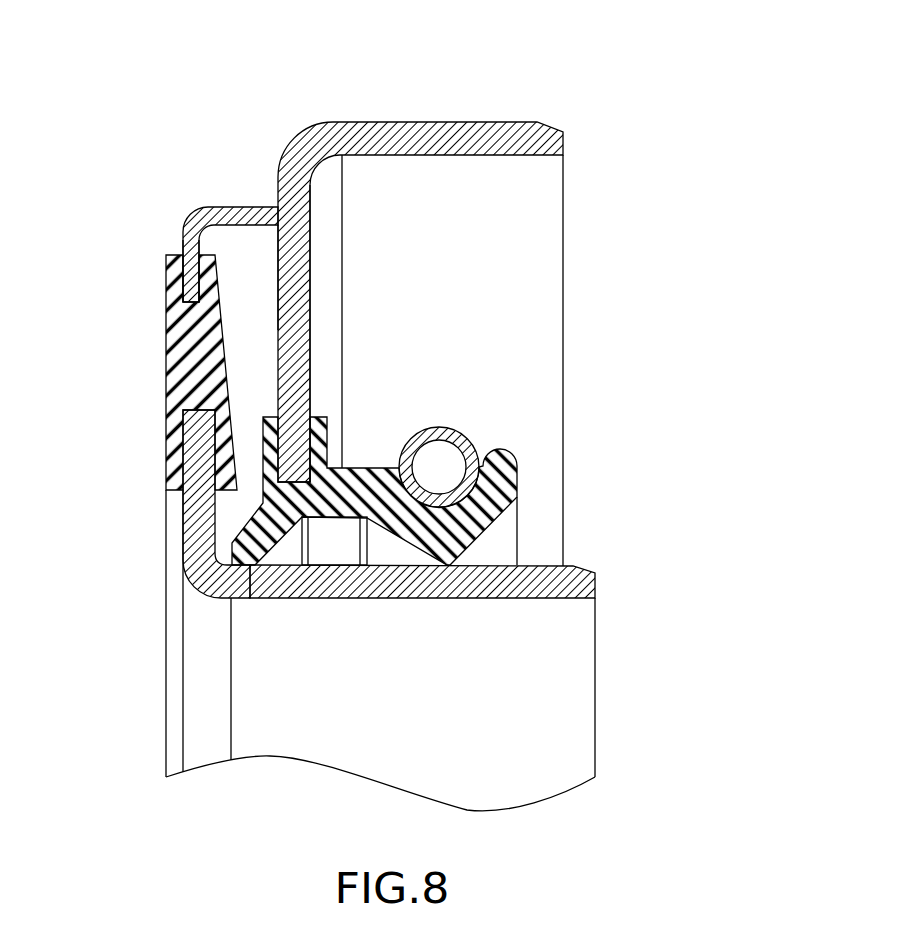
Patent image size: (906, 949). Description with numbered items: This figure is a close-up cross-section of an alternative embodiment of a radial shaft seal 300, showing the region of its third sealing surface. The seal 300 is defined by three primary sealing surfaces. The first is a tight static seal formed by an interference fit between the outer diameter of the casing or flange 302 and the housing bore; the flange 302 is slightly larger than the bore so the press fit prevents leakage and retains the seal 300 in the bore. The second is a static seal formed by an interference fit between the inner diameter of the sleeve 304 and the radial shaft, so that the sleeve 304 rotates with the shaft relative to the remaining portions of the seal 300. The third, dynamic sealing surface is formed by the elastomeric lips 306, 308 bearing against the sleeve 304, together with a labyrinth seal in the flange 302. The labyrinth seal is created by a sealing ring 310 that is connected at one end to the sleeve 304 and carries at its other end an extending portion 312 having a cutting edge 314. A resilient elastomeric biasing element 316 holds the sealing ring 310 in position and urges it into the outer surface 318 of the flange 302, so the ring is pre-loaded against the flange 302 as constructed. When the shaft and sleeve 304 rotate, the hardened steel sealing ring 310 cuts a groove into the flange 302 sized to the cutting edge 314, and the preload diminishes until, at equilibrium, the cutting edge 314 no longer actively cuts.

The radial shaft seal 300 is at (415, 415).
The flange 302 is at (508, 122).
The sleeve 304 is at (587, 583).
The elastomeric lip 306 is at (450, 565).
The elastomeric lip 308 is at (258, 555).
The sealing ring 310 is at (185, 231).
The extending portion 312 is at (210, 204).
The cutting edge 314 is at (277, 207).
The resilient elastomeric biasing element 316 is at (166, 383).
The outer surface 318 is at (277, 302).